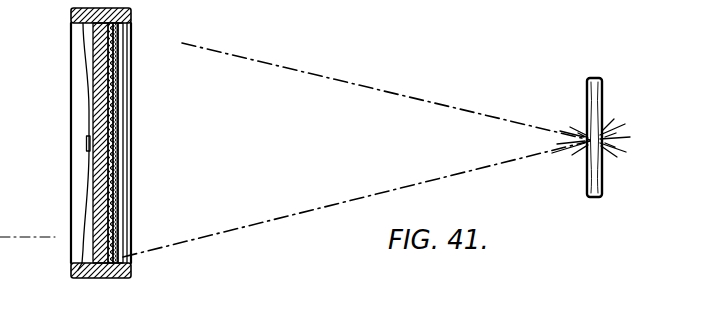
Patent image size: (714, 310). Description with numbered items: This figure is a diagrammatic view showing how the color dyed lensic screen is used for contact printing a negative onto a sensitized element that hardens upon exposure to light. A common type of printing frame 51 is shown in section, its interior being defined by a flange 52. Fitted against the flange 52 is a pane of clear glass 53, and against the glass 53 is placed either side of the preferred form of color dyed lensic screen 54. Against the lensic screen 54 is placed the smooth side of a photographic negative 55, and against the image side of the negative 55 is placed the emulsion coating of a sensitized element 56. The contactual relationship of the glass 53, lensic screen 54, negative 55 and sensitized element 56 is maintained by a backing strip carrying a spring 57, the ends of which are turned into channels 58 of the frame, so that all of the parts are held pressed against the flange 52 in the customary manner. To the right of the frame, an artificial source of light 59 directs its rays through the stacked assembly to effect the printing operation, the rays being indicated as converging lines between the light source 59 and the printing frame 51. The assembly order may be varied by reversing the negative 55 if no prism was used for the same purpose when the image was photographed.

The printing frame 51 is at (131, 13).
The flange 52 is at (123, 29).
The pane of clear glass 53 is at (117, 123).
The color dyed lensic screen 54 is at (110, 143).
The photographic negative 55 is at (118, 166).
The sensitized element 56 is at (122, 197).
The spring 57 is at (83, 208).
The channels 58 is at (72, 15).
The artificial source of light 59 is at (616, 133).